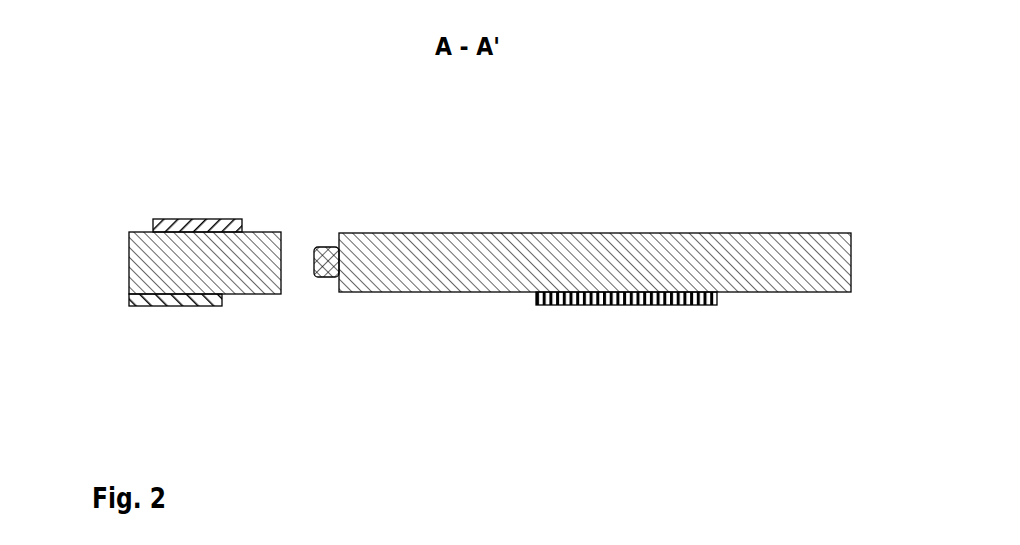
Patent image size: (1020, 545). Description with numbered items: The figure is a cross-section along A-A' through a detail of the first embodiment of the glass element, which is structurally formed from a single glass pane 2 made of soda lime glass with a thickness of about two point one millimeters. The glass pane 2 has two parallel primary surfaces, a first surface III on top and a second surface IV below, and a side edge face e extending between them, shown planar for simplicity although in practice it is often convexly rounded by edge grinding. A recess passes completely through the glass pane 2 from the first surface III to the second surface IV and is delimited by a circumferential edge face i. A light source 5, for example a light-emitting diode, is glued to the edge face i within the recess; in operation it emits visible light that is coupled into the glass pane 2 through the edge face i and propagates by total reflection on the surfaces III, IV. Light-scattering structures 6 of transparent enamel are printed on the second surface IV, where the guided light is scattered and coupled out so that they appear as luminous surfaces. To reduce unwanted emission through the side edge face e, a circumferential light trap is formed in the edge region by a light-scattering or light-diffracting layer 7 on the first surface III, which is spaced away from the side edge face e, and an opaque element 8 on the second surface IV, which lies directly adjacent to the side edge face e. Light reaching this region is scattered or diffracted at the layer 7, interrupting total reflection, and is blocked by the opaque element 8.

The glass pane 2 is at (440, 267).
The light source 5 is at (326, 263).
The light-scattering structures 6 is at (620, 305).
The light-scattering or light-diffracting layer 7 is at (170, 233).
The opaque element 8 is at (175, 300).
The side edge face e is at (127, 261).
The edge face i is at (335, 289).
The first surface III is at (755, 231).
The second surface IV is at (809, 295).